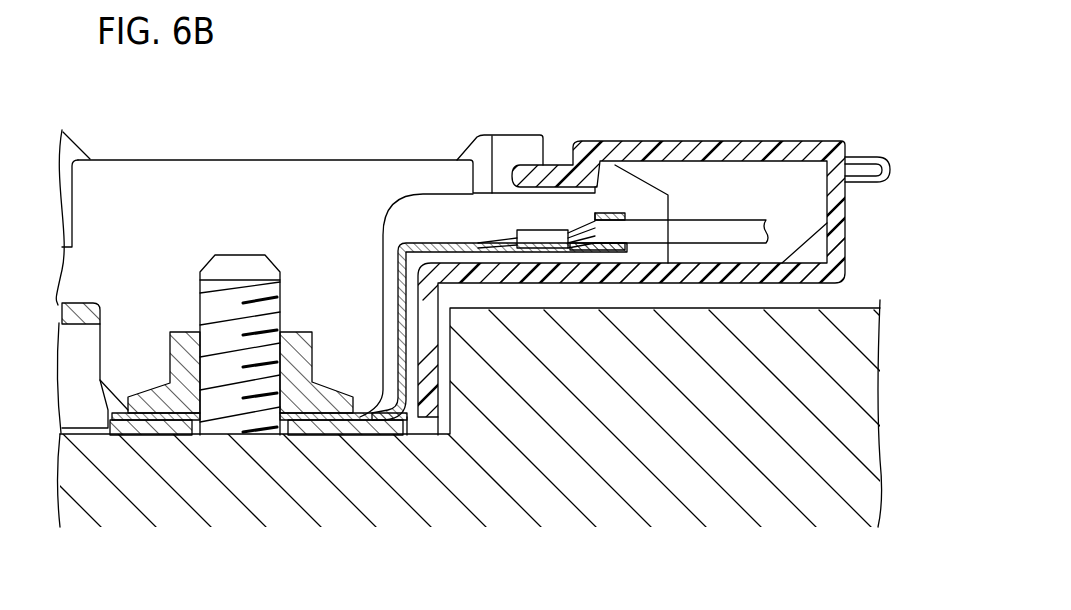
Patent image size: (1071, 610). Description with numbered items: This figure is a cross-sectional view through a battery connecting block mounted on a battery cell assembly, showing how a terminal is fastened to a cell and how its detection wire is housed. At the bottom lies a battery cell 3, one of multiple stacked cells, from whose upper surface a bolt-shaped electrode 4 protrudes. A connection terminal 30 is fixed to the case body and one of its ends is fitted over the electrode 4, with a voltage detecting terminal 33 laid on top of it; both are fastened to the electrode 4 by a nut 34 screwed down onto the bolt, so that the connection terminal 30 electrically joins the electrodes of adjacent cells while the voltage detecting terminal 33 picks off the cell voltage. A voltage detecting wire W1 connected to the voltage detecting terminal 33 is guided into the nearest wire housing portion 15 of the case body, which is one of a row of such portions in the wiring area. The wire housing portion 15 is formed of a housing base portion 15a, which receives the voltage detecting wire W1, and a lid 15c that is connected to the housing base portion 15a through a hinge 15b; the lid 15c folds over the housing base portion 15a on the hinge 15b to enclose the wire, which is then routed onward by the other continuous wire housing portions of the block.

The battery cell 3 is at (628, 483).
The electrode 4 is at (240, 265).
The wire housing portion 15 is at (677, 293).
The housing base portion 15a is at (752, 277).
The hinge 15b is at (878, 157).
The lid 15c is at (785, 141).
The connection terminal 30 is at (150, 428).
The voltage detecting terminal 33 is at (155, 417).
The nut 34 is at (183, 343).
The voltage detecting wire W1 is at (702, 232).